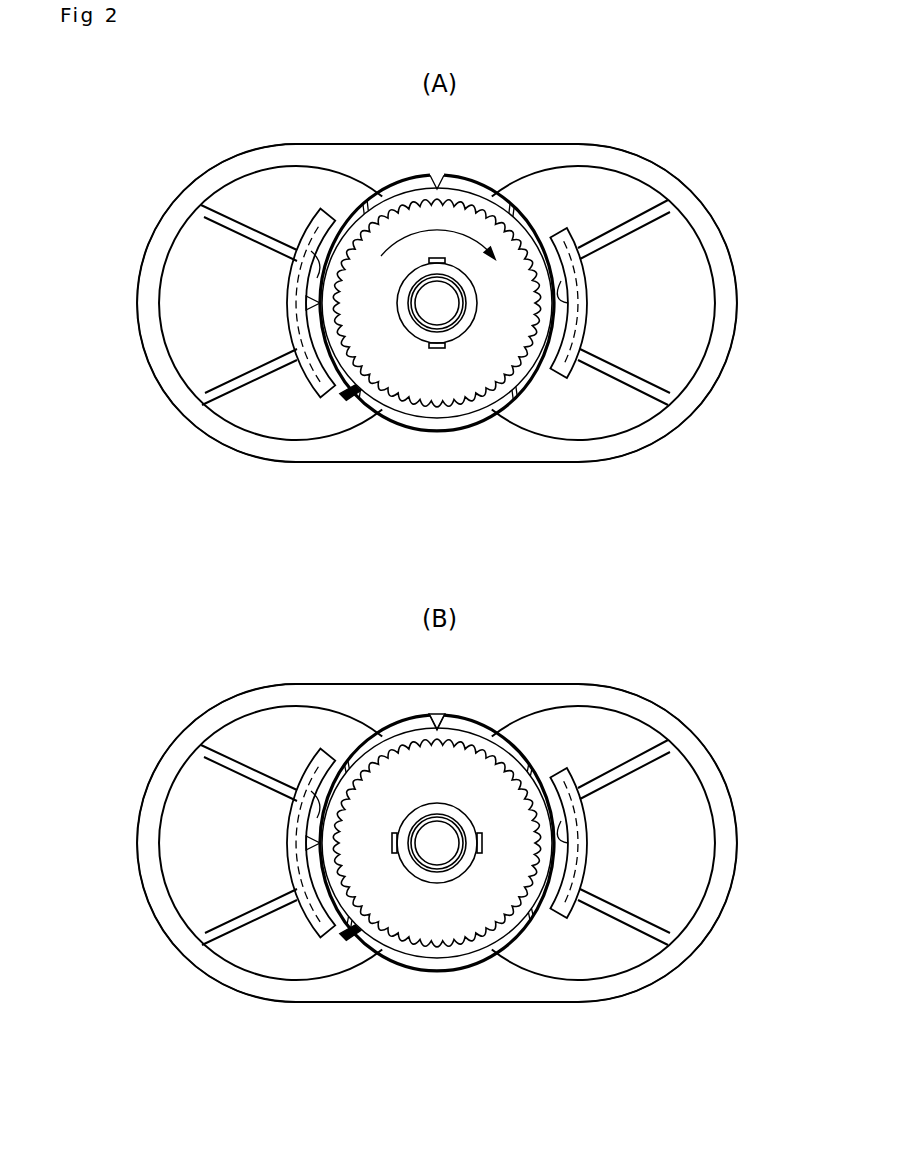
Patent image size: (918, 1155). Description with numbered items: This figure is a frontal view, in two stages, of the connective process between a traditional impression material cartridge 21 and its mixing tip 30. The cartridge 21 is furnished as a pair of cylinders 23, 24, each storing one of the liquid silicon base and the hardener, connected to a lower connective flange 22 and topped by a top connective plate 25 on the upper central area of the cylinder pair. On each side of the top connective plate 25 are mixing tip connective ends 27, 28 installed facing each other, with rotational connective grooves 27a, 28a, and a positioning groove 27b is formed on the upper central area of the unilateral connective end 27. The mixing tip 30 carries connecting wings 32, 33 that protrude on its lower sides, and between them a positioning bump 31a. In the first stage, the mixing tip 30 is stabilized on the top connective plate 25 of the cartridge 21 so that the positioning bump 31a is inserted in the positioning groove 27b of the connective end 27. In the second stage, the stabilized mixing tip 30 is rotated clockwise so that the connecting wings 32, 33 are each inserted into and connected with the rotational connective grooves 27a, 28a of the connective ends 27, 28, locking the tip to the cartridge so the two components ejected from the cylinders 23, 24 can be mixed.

The impression material cartridge 21 is at (241, 153).
The lower connective flange 22 is at (508, 450).
The cylinder 23 is at (257, 417).
The cylinder 24 is at (610, 410).
The top connective plate 25 is at (537, 243).
The mixing tip connective end 27 is at (300, 337).
The rotational connective groove 27a is at (297, 280).
The positioning groove 27b is at (307, 867).
The mixing tip connective end 28 is at (577, 331).
The rotational connective groove 28a is at (563, 285).
The mixing tip 30 is at (344, 397).
The positioning bump 31a is at (308, 303).
The connecting wing 32 is at (436, 430).
The connecting wing 33 is at (476, 180).